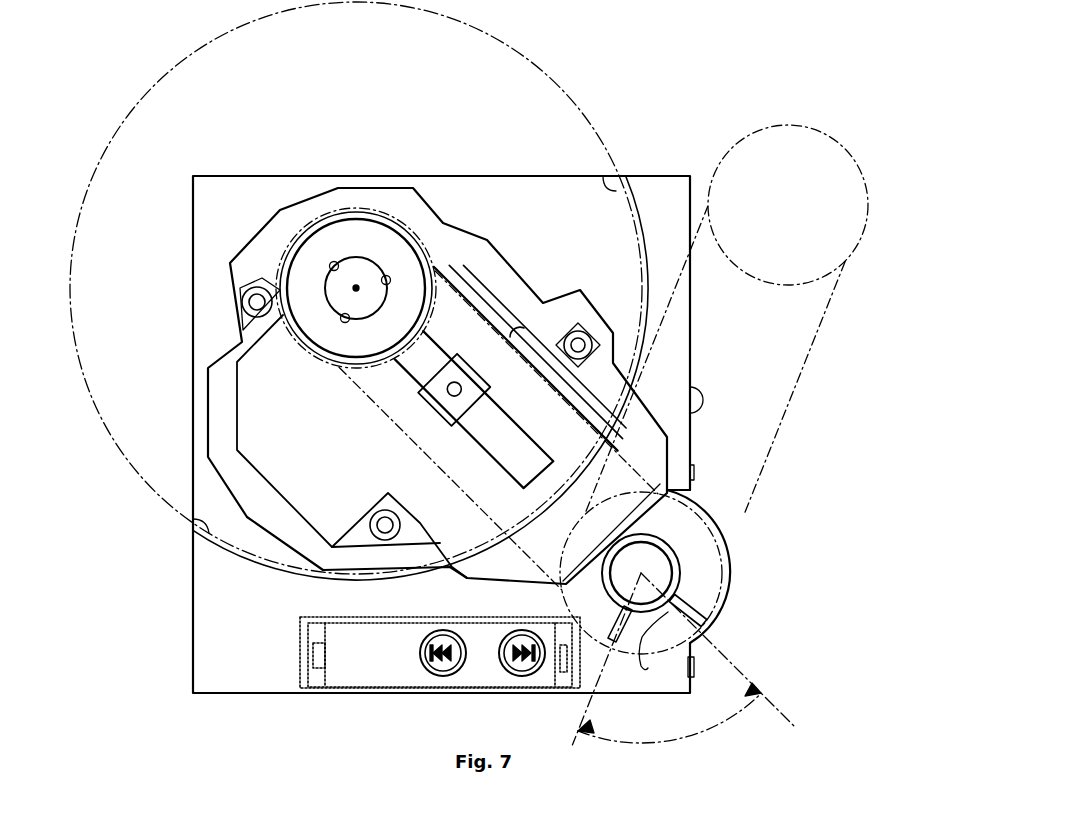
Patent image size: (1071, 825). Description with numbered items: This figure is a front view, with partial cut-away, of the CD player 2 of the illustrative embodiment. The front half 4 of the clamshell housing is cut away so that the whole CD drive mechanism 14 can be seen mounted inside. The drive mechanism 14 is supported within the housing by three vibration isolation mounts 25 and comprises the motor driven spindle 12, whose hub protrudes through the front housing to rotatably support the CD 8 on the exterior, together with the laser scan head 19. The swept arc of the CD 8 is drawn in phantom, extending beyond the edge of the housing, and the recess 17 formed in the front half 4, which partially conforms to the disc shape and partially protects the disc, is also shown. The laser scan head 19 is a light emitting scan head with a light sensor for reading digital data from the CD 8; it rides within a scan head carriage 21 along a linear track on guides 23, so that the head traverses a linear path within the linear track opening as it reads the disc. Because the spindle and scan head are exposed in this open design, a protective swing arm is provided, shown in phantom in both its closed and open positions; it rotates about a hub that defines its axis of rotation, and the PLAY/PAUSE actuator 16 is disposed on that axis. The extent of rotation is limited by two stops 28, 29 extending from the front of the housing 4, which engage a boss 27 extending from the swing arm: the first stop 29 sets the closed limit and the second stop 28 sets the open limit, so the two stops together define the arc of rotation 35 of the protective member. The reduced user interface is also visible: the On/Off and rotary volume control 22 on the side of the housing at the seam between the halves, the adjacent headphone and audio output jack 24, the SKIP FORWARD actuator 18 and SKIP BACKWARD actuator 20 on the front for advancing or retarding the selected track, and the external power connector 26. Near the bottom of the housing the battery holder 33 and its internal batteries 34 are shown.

The CD player 2 is at (120, 607).
The front half of the housing 4 is at (193, 660).
The CD 8 is at (104, 438).
The spindle 12 is at (328, 290).
The CD drive mechanism 14 is at (233, 370).
The PLAY/PAUSE actuator 16 is at (682, 576).
The recess 17 is at (622, 178).
The SKIP FORWARD actuator 18 is at (514, 634).
The laser scan head 19 is at (455, 382).
The SKIP BACKWARD actuator 20 is at (430, 634).
The scan head carriage 21 is at (490, 438).
The On/Off and rotary volume control 22 is at (700, 398).
The guides 23 is at (500, 310).
The headphone and audio output jack 24 is at (696, 472).
The vibration isolation mounts 25 is at (248, 300).
The external power connector 26 is at (695, 670).
The boss 27 is at (653, 651).
The second stop 28 is at (614, 622).
The first stop 29 is at (700, 612).
The battery holder 33 is at (300, 632).
The batteries 34 is at (313, 680).
The arc of rotation 35 is at (705, 735).